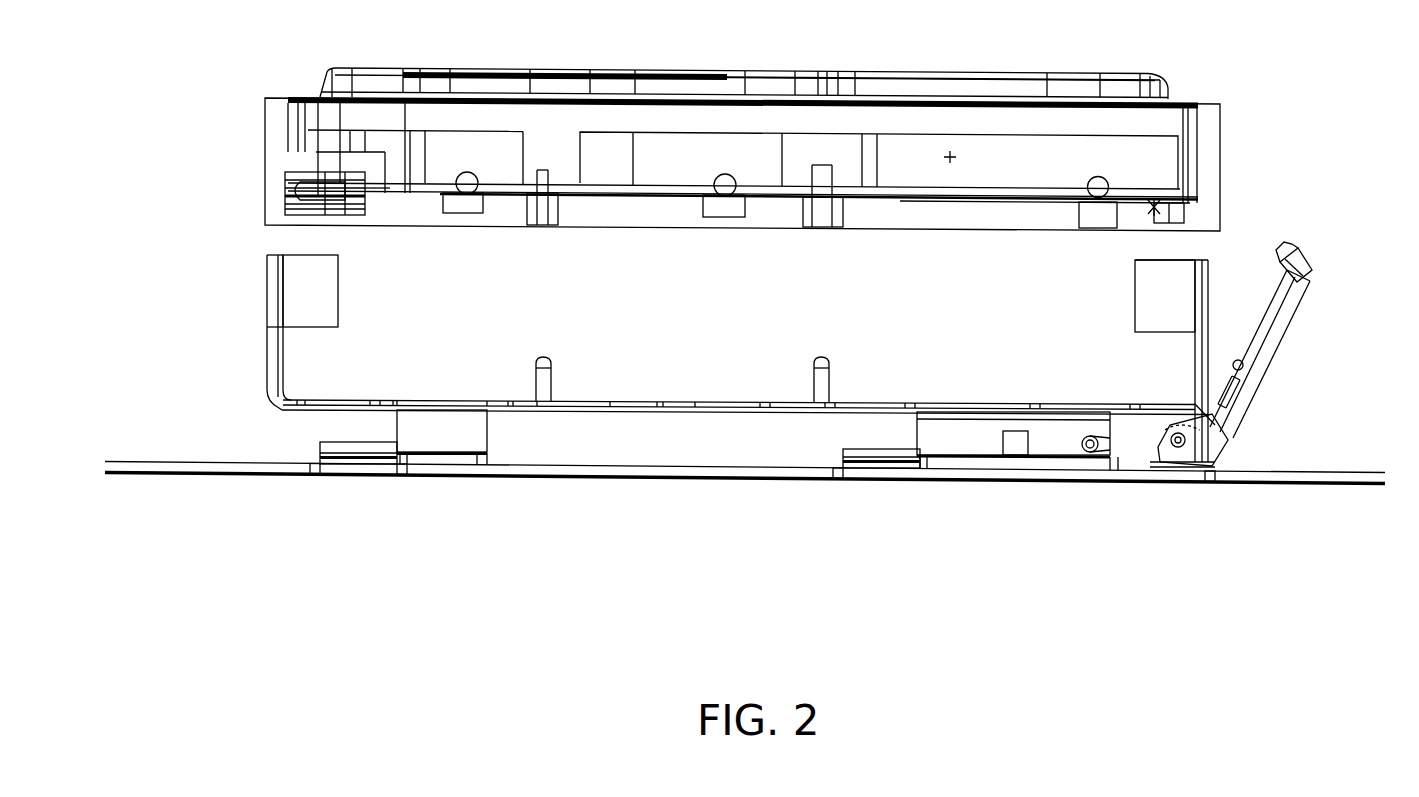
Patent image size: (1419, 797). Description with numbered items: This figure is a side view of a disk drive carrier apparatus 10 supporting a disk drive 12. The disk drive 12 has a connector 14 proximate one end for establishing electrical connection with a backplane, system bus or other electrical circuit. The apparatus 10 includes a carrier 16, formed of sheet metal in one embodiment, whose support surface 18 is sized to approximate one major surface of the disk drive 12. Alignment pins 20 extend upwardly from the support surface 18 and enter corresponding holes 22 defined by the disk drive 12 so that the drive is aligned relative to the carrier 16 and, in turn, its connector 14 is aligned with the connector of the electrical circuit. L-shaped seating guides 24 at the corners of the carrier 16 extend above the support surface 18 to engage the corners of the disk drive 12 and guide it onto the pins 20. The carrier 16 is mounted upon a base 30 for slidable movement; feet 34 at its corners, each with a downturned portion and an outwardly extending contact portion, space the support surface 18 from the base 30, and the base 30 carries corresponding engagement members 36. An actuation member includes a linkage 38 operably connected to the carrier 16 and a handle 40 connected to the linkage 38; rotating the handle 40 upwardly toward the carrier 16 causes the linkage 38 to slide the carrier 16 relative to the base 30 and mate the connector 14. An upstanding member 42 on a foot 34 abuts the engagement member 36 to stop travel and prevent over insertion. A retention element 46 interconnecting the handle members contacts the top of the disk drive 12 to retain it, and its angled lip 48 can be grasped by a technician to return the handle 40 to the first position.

The disk drive carrier apparatus 10 is at (1222, 243).
The disk drive 12 is at (943, 158).
The connector 14 is at (305, 200).
The carrier 16 is at (232, 405).
The support surface 18 is at (700, 408).
The alignment pins 20 is at (545, 372).
The holes 22 is at (823, 210).
The seating guide 24 is at (305, 290).
The base 30 is at (237, 470).
The feet 34 is at (958, 437).
The engagement members 36 is at (945, 457).
The linkage 38 is at (1130, 453).
The handle 40 is at (1263, 328).
The upstanding member 42 is at (1013, 441).
The retention element 46 is at (1312, 272).
The angled lip 48 is at (1292, 243).